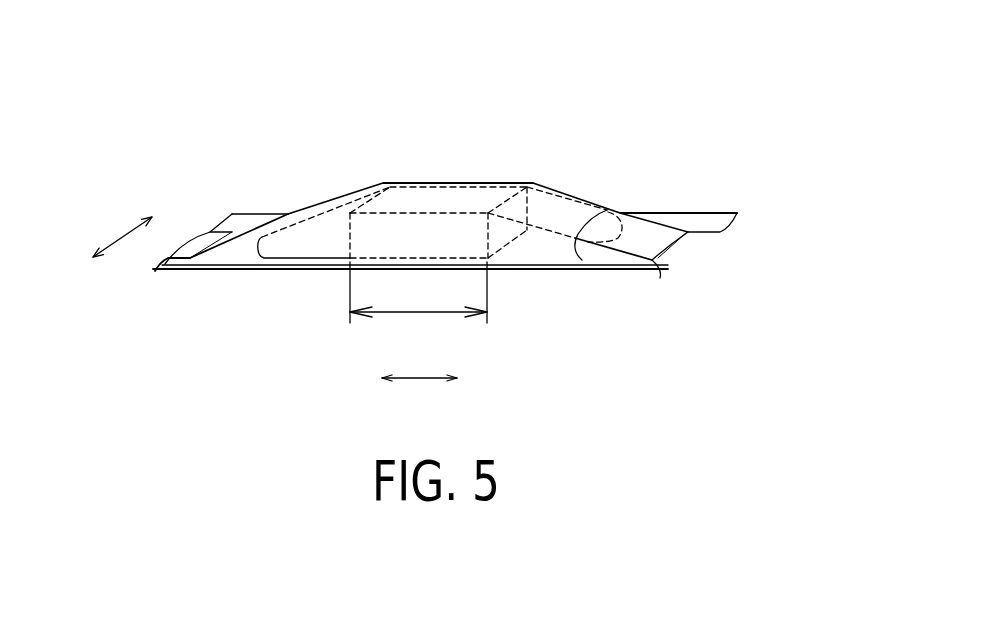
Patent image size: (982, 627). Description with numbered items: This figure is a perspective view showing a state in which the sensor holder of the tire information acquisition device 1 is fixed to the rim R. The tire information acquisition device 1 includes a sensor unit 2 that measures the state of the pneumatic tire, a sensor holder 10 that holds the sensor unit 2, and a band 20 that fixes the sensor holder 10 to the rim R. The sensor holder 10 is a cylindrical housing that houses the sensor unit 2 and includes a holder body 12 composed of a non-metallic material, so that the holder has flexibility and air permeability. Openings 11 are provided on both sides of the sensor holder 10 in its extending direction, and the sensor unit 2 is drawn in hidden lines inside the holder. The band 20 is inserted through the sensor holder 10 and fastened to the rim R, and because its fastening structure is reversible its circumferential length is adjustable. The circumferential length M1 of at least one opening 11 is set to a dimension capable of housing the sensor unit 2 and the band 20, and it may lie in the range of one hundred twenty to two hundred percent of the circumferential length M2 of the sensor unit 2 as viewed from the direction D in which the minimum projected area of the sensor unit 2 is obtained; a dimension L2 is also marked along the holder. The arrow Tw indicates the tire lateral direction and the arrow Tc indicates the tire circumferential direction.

The tire information acquisition device 1 is at (652, 112).
The sensor unit 2 is at (452, 183).
The sensor holder 10 is at (549, 183).
The opening 11 is at (285, 218).
The holder body 12 is at (384, 183).
The band 20 is at (239, 232).
The circumferential length of opening M1 is at (595, 208).
The circumferential length of sensor unit M2 is at (503, 204).
The rim R is at (712, 230).
The direction of minimum projected area D is at (755, 222).
The tire lateral direction Tw is at (123, 234).
The tire circumferential direction Tc is at (419, 377).
The groove length L2 is at (418, 292).